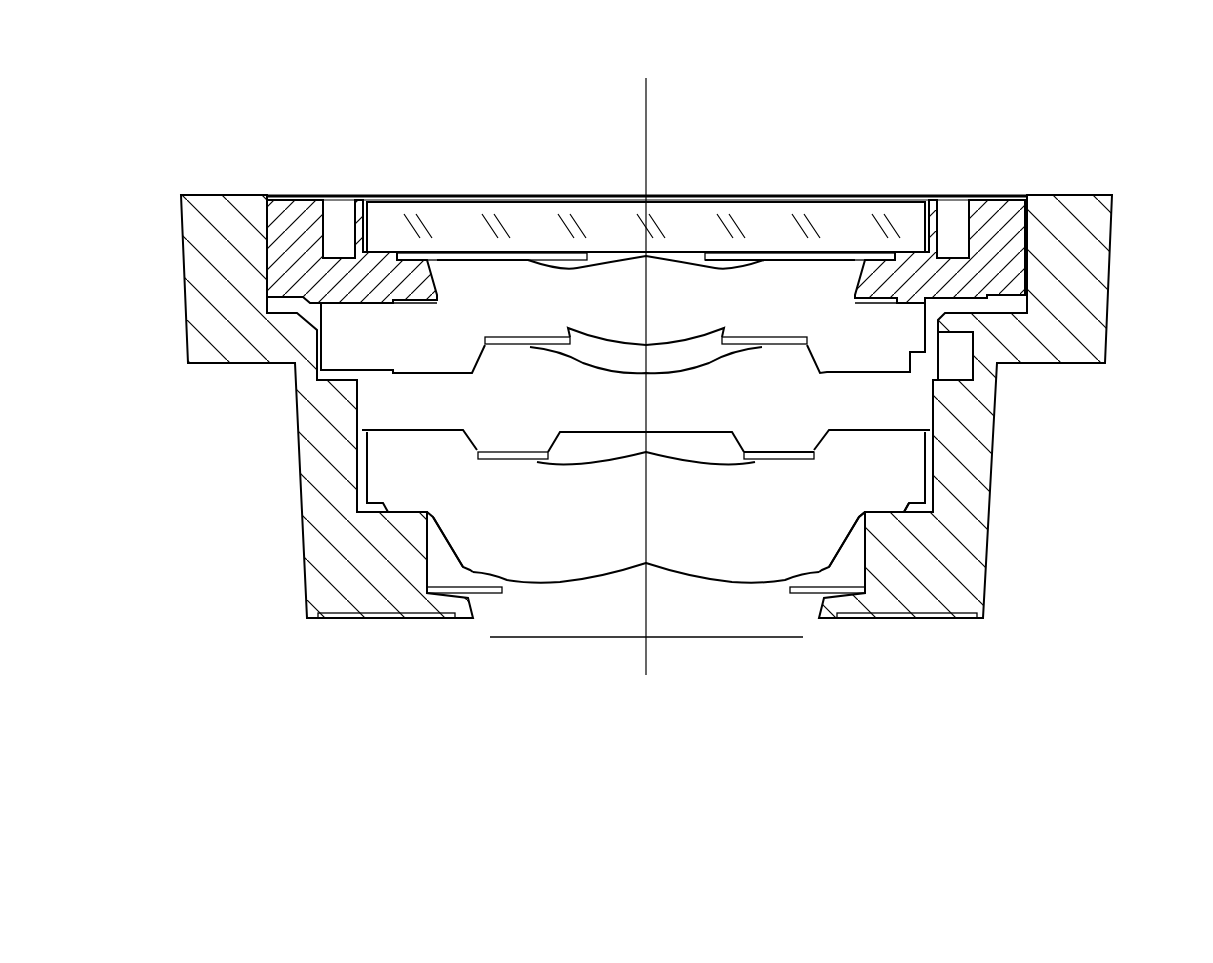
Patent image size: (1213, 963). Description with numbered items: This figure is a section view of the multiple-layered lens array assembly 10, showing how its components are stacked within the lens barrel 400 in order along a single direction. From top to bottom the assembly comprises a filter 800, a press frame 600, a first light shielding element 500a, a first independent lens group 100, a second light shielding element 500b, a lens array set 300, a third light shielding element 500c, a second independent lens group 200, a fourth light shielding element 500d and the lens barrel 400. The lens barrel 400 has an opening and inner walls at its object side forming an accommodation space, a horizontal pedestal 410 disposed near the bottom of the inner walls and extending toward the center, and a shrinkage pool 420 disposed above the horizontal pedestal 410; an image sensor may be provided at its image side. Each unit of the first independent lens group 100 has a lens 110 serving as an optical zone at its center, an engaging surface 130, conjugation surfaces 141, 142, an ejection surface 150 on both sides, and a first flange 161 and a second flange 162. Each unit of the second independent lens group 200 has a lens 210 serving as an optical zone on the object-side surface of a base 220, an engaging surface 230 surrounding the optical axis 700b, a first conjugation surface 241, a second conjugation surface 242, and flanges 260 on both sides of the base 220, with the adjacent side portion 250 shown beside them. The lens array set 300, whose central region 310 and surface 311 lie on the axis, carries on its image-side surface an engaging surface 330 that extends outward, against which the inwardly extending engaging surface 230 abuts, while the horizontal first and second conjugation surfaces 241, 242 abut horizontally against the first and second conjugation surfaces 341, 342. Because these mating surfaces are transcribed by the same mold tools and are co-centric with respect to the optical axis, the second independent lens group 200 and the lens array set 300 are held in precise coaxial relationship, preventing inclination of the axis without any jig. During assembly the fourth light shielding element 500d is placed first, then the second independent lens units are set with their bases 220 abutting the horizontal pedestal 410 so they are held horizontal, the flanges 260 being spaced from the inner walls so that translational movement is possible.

The multiple-layered lens array assembly 10 is at (82, 72).
The first independent lens group 100 is at (347, 325).
The lens 110 is at (665, 303).
The engaging surface 130 is at (818, 362).
The first object-side peripheral surface 141 is at (770, 340).
The first image-side peripheral surface 142 is at (868, 376).
The ejection surface 150 is at (347, 299).
The first flange 161 is at (317, 352).
The second flange 162 is at (925, 340).
The second independent lens group 200 is at (397, 488).
The lens 210 is at (540, 586).
The base 220 is at (477, 553).
The engaging surface 230 is at (867, 513).
The first conjugation surface 241 is at (773, 448).
The second conjugation surface 242 is at (904, 513).
The outer side surface 250 is at (928, 480).
The flange 260 is at (933, 500).
The lens array set 300 is at (380, 388).
The optical portion 310 is at (668, 432).
The optical surface 311 is at (540, 440).
The engaging surface 330 is at (978, 254).
The first conjugation surface 341 is at (876, 178).
The second conjugation surface 342 is at (992, 400).
The lens barrel 400 is at (305, 597).
The horizontal pedestal 410 is at (500, 468).
The shrinkage pool 420 is at (960, 368).
The first light shielding element 500a is at (493, 257).
The second light shielding element 500b is at (530, 347).
The third light shielding element 500c is at (520, 460).
The fourth light shielding element 500d is at (400, 613).
The press frame 600 is at (298, 262).
The optical axis 700b is at (651, 358).
The filter 800 is at (840, 228).